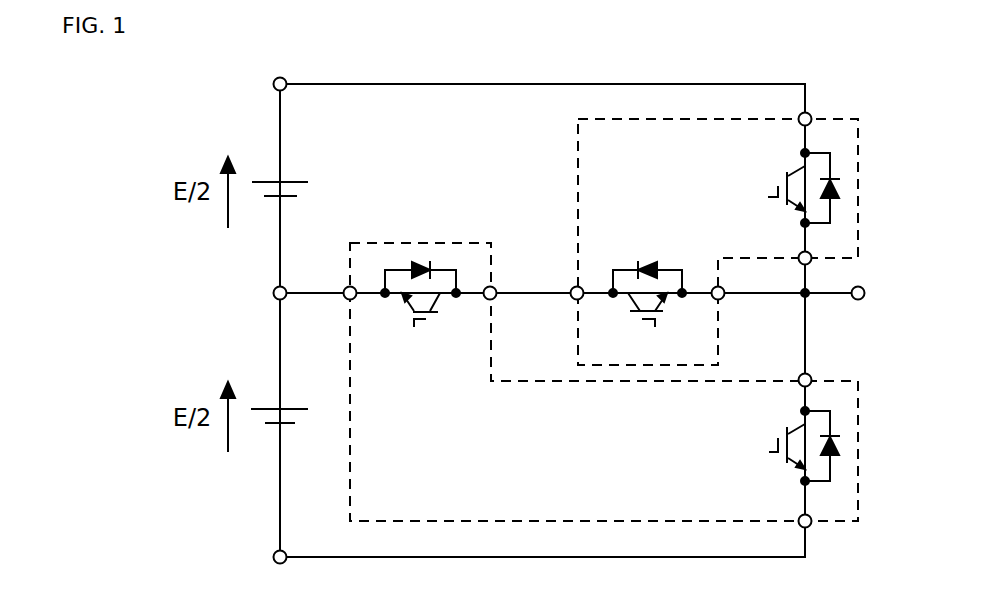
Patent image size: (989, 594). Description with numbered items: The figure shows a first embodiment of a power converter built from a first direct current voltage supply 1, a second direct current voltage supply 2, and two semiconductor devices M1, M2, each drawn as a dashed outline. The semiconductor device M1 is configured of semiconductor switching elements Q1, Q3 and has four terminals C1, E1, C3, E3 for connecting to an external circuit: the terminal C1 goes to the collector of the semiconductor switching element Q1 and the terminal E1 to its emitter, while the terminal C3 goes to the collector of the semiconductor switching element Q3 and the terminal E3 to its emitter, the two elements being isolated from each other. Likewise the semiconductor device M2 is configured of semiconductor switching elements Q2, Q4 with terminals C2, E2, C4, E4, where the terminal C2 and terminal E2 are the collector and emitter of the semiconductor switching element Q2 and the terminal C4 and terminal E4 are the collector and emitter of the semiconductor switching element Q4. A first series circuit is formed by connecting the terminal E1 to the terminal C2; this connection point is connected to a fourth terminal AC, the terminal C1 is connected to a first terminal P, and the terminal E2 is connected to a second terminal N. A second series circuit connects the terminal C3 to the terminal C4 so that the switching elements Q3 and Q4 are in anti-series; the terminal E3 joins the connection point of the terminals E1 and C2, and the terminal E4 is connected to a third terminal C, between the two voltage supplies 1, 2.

The first direct current voltage supply 1 is at (267, 176).
The second direct current voltage supply 2 is at (270, 408).
The semiconductor device M1 is at (862, 184).
The semiconductor device M2 is at (418, 242).
The semiconductor switching element Q1 is at (783, 188).
The semiconductor switching element Q2 is at (783, 446).
The semiconductor switching element Q3 is at (647, 311).
The semiconductor switching element Q4 is at (420, 311).
The terminal C1 is at (790, 106).
The terminal C2 is at (790, 369).
The terminal C3 is at (564, 281).
The terminal C4 is at (506, 281).
The terminal E1 is at (791, 275).
The terminal E2 is at (789, 534).
The terminal E3 is at (731, 282).
The terminal E4 is at (335, 281).
The first terminal P is at (270, 96).
The third terminal C is at (267, 296).
The second terminal N is at (268, 544).
The fourth terminal AC is at (856, 315).